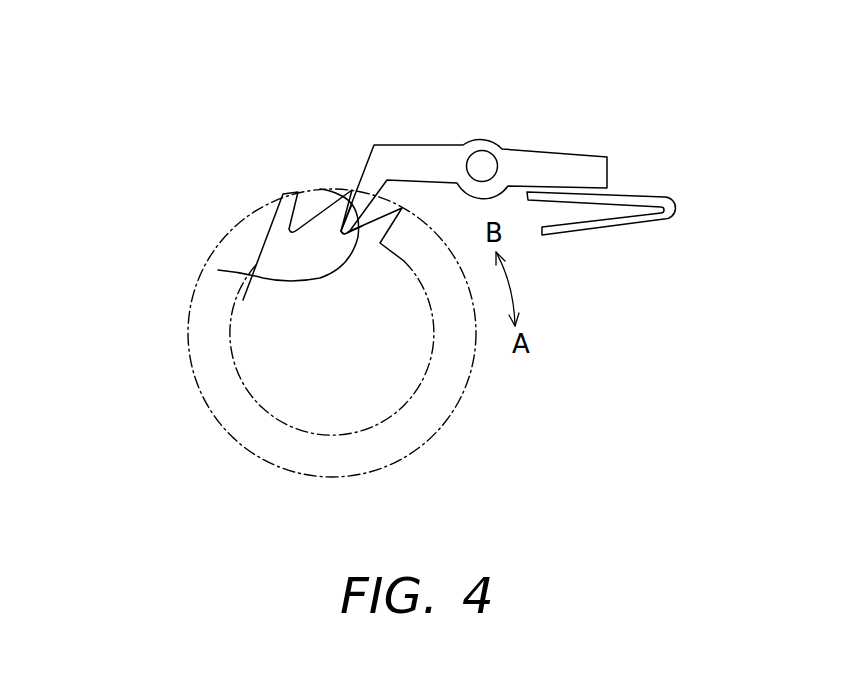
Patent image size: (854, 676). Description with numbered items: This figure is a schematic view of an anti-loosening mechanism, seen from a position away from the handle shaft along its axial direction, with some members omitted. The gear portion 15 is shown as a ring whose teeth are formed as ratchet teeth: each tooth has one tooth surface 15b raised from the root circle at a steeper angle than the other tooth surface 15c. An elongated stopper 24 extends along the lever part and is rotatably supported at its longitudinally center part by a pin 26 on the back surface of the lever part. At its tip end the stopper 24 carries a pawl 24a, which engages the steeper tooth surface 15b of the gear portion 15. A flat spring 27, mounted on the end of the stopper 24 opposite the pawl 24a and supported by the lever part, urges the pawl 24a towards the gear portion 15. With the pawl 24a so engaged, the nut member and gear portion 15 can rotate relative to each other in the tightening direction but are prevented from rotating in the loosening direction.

The gear portion 15 is at (481, 393).
The tooth surface 15b is at (218, 270).
The tooth surface 15c is at (327, 203).
The stopper 24 is at (526, 146).
The pawl 24a is at (372, 183).
The pin 26 is at (482, 160).
The flat spring 27 is at (643, 193).